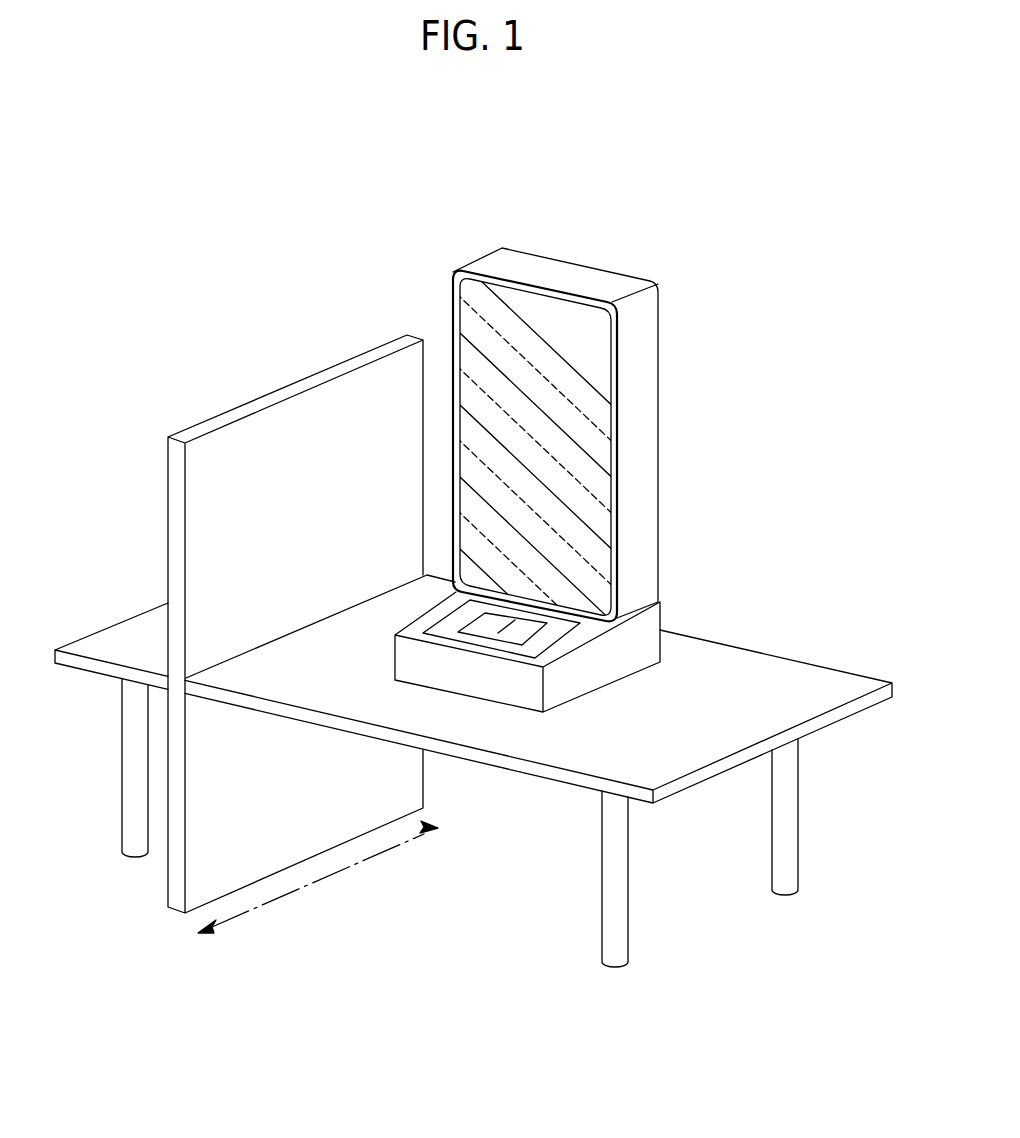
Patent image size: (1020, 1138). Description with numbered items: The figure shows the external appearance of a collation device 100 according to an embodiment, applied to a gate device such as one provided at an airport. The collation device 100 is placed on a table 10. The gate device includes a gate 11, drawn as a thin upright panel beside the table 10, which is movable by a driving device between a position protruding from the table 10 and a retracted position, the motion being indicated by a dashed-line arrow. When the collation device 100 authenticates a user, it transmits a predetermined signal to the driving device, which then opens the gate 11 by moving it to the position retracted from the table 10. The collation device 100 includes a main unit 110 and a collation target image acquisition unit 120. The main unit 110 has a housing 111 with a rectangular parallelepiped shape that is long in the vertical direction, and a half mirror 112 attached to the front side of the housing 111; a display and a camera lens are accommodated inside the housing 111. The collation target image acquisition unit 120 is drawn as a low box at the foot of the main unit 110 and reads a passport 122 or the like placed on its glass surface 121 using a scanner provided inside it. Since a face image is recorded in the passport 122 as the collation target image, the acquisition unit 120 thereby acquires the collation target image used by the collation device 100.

The table 10 is at (817, 673).
The gate 11 is at (348, 365).
The collation device 100 is at (486, 241).
The main unit 110 is at (588, 466).
The housing 111 is at (565, 290).
The half mirror 112 is at (597, 352).
The collation target image acquisition unit 120 is at (576, 719).
The glass surface 121 is at (542, 640).
The passport 122 is at (513, 632).